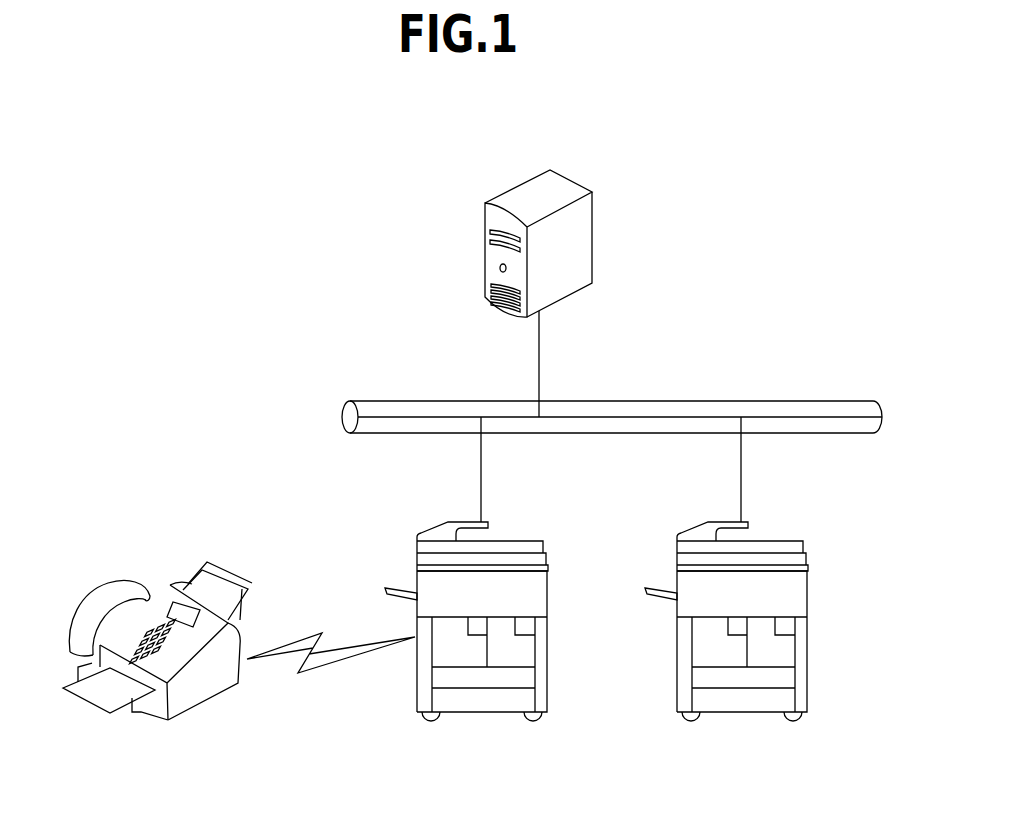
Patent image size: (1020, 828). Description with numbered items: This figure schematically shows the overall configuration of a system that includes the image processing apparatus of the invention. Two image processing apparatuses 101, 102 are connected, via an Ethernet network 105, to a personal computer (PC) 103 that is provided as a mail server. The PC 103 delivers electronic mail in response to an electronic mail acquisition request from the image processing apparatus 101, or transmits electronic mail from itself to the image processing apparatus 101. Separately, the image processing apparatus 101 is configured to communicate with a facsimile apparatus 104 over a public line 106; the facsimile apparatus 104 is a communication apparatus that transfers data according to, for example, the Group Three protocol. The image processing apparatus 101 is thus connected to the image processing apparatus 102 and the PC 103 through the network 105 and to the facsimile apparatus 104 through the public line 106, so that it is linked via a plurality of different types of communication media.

The image processing apparatus 101 is at (480, 713).
The image processing apparatus 102 is at (740, 713).
The personal computer (PC) 103 is at (568, 180).
The facsimile apparatus 104 is at (160, 723).
The network 105 is at (801, 401).
The public line 106 is at (305, 633).